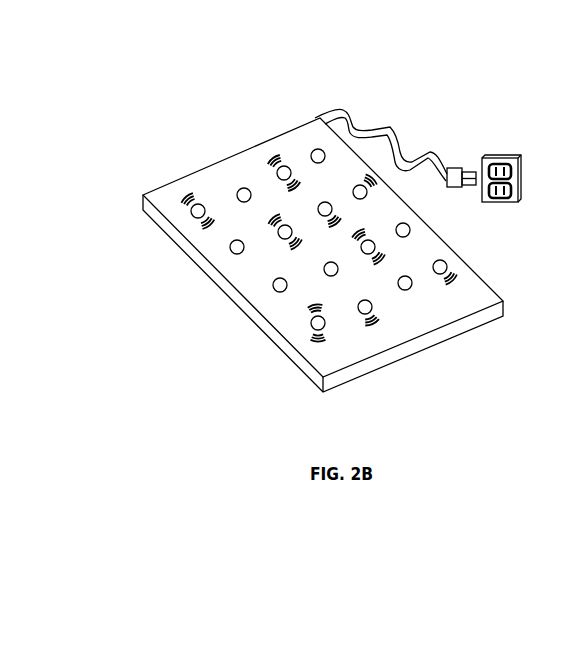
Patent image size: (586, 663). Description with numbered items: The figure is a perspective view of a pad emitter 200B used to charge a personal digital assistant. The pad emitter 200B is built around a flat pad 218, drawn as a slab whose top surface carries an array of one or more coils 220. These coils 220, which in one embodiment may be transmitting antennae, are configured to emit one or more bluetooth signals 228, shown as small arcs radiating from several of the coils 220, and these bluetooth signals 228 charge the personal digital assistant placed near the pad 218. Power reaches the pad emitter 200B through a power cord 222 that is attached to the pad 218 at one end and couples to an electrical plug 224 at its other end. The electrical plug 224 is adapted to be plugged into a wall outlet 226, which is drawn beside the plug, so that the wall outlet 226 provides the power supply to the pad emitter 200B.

The pad emitter 200B is at (318, 248).
The pad 218 is at (212, 280).
The coils 220 is at (310, 327).
The power cord 222 is at (342, 107).
The electrical plug 224 is at (452, 166).
The wall outlet 226 is at (521, 187).
The bluetooth signals 228 is at (203, 224).